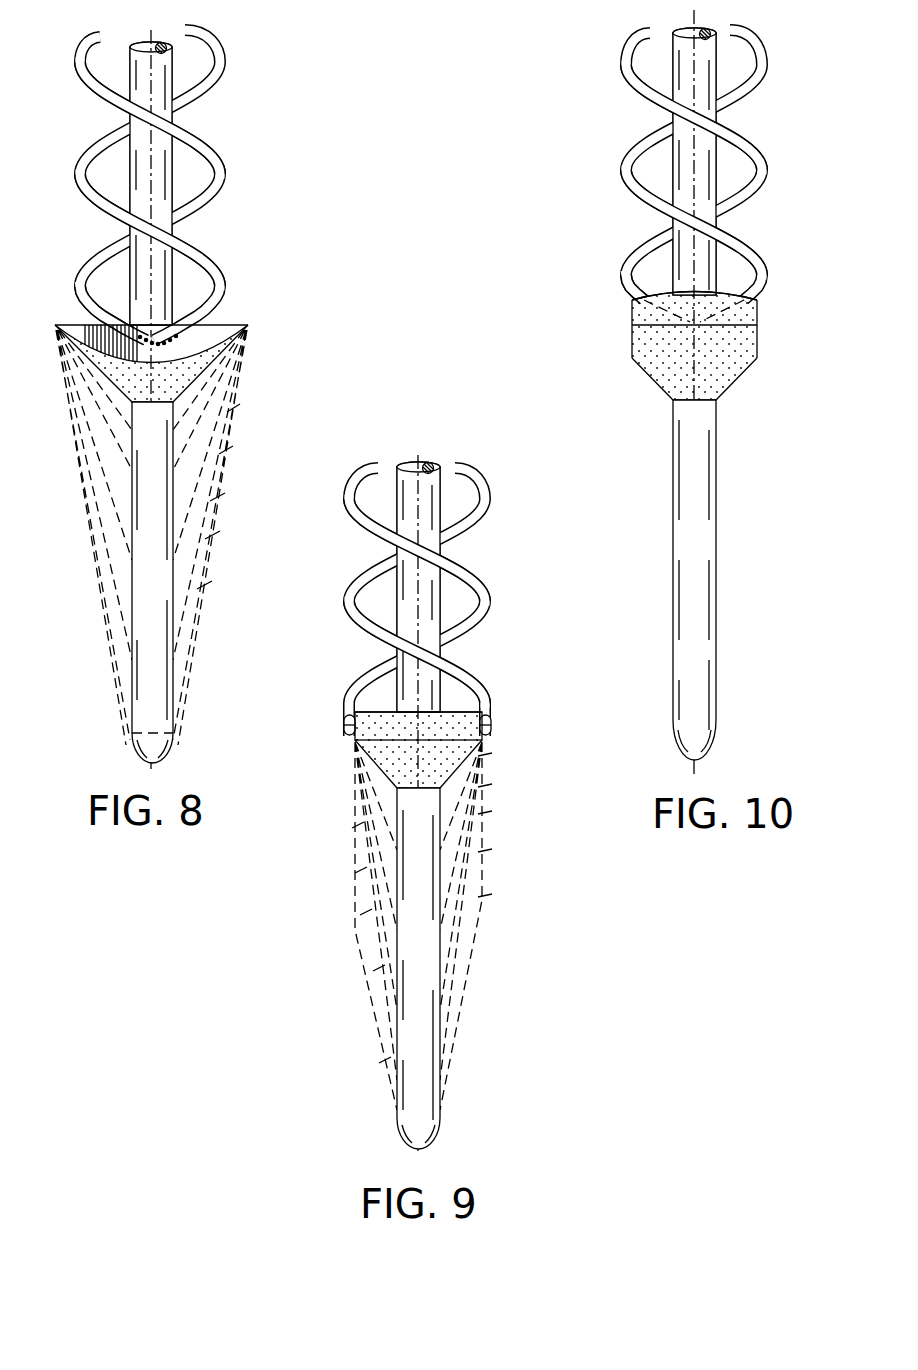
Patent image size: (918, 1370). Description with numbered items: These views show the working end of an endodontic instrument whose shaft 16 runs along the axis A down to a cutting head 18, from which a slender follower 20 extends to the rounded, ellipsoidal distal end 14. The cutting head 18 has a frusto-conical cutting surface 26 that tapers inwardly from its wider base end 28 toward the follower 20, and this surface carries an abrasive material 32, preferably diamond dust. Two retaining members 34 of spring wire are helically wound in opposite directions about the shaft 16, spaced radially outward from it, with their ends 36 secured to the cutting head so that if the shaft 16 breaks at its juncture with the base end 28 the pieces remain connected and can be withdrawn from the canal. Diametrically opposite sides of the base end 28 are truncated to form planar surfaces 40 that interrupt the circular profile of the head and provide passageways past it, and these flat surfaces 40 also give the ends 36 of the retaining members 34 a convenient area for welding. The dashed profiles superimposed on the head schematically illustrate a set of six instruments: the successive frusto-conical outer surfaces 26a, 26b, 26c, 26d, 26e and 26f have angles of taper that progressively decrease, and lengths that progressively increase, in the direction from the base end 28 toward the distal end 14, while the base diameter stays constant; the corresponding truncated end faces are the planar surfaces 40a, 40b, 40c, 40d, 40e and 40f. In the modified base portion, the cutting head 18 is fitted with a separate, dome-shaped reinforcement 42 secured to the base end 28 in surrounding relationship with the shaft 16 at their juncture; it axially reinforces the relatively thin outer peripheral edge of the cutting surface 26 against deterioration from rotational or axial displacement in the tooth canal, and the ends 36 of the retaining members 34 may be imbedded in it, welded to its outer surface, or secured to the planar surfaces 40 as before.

In FIG. 8, the distal end 14 is at (142, 585).
In FIG. 9, the distal end 14 is at (462, 970).
In FIG. 10, the distal end 14 is at (729, 585).
In FIG. 8, the shaft 16 is at (163, 83).
In FIG. 9, the shaft 16 is at (427, 488).
In FIG. 10, the shaft 16 is at (685, 60).
In FIG. 10, the cutting head 18 is at (700, 585).
In FIG. 8, the follower 20 is at (170, 748).
In FIG. 9, the follower 20 is at (430, 1080).
In FIG. 10, the follower 20 is at (705, 578).
In FIG. 10, the frusto-conical cutting surface 26 is at (740, 383).
In FIG. 8, the frusto-conical outer surface (first instrument) 26a is at (212, 366).
In FIG. 9, the frusto-conical outer surface (first instrument) 26a is at (375, 769).
In FIG. 8, the frusto-conical outer surface (second instrument) 26b is at (240, 408).
In FIG. 9, the frusto-conical outer surface (second instrument) 26b is at (358, 825).
In FIG. 8, the frusto-conical outer surface (third instrument) 26c is at (233, 450).
In FIG. 9, the frusto-conical outer surface (third instrument) 26c is at (361, 870).
In FIG. 8, the frusto-conical outer surface (fourth instrument) 26d is at (225, 497).
In FIG. 9, the frusto-conical outer surface (fourth instrument) 26d is at (366, 912).
In FIG. 8, the frusto-conical outer surface (fifth instrument) 26e is at (222, 535).
In FIG. 9, the frusto-conical outer surface (fifth instrument) 26e is at (379, 968).
In FIG. 8, the frusto-conical outer surface (sixth instrument) 26f is at (212, 585).
In FIG. 9, the frusto-conical outer surface (sixth instrument) 26f is at (385, 1060).
In FIG. 8, the base end 28 is at (196, 330).
In FIG. 9, the base end 28 is at (450, 712).
In FIG. 10, the base end 28 is at (745, 318).
In FIG. 8, the abrasive material 32 is at (104, 358).
In FIG. 9, the abrasive material 32 is at (380, 731).
In FIG. 10, the abrasive material 32 is at (655, 362).
In FIG. 8, the retaining members 34 is at (78, 158).
In FIG. 9, the retaining members 34 is at (491, 490).
In FIG. 10, the retaining members 34 is at (617, 165).
In FIG. 8, the ends of retaining members 36 is at (137, 325).
In FIG. 9, the ends of retaining members 36 is at (345, 718).
In FIG. 10, the ends of retaining members 36 is at (730, 305).
In FIG. 10, the planar surfaces 40 is at (632, 340).
In FIG. 8, the planar surface (first instrument) 40a is at (198, 328).
In FIG. 9, the planar surface (first instrument) 40a is at (483, 738).
In FIG. 9, the planar surface (second instrument) 40b is at (492, 755).
In FIG. 9, the planar surface (third instrument) 40c is at (492, 786).
In FIG. 9, the planar surface (fourth instrument) 40d is at (492, 813).
In FIG. 9, the planar surface (fifth instrument) 40e is at (492, 851).
In FIG. 9, the planar surface (sixth instrument) 40f is at (492, 896).
In FIG. 10, the reinforcement 42 is at (628, 300).
In FIG. 8, the axis A is at (153, 240).
In FIG. 9, the axis A is at (420, 523).
In FIG. 10, the axis A is at (698, 95).